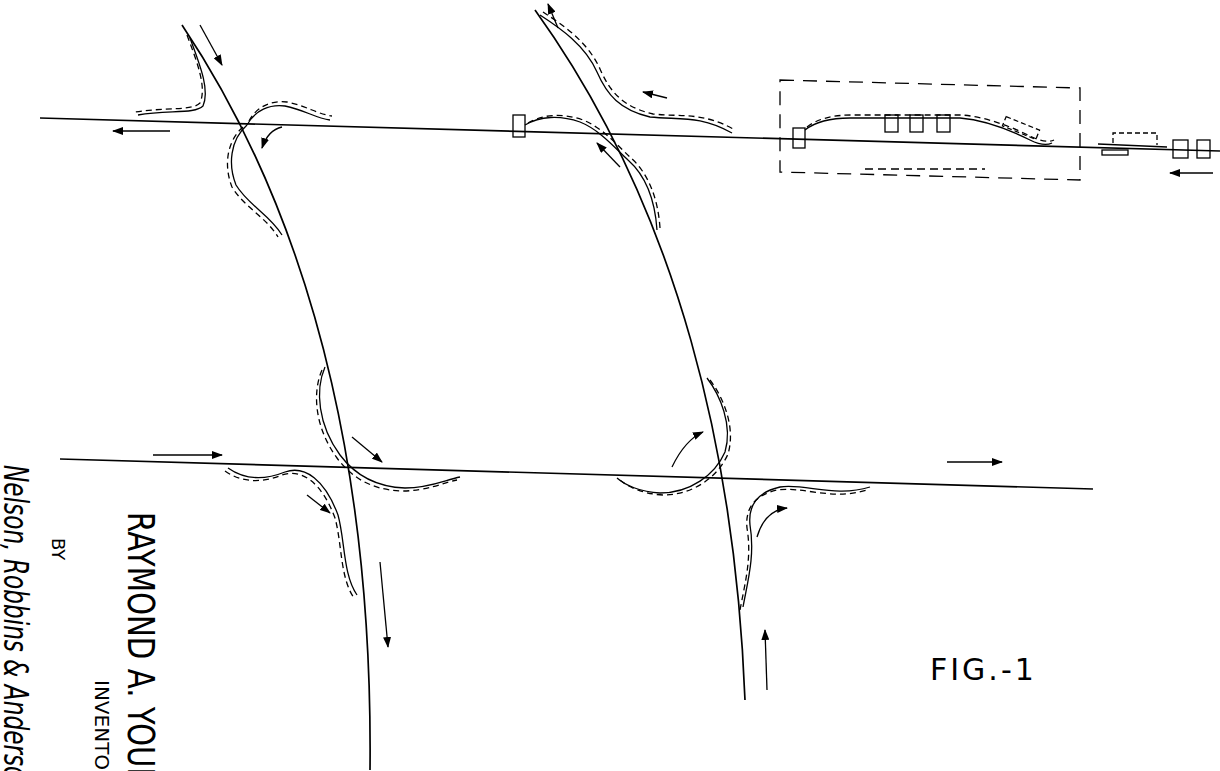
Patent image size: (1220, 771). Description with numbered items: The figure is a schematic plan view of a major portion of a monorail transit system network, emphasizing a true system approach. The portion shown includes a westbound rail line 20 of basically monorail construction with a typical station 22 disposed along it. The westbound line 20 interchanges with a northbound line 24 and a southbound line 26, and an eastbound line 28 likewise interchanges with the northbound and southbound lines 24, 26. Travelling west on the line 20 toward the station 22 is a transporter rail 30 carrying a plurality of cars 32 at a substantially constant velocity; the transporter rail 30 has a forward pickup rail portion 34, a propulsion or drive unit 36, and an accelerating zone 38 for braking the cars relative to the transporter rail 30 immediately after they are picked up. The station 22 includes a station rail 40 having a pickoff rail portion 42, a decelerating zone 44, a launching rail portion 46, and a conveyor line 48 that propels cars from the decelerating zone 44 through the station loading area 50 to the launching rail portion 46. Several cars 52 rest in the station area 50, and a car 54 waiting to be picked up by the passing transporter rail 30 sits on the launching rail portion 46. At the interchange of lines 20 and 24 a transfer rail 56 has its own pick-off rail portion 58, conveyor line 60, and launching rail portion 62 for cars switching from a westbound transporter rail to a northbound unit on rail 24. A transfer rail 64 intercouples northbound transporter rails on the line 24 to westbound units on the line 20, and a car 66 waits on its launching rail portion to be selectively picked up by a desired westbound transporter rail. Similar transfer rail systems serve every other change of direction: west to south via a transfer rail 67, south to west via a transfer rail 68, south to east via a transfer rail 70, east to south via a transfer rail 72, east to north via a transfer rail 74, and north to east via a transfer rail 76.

The westbound rail line 20 is at (388, 125).
The station 22 is at (977, 178).
The northbound line 24 is at (535, 10).
The southbound line 26 is at (220, 95).
The eastbound line 28 is at (960, 485).
The transporter rail 30 is at (1167, 147).
The cars 32 is at (1205, 140).
The forward pickup rail portion 34 is at (1105, 143).
The propulsion or drive unit 36 is at (1106, 157).
The accelerating zone 38 is at (1143, 133).
The station rail 40 is at (950, 122).
The pickoff rail portion 42 is at (1052, 140).
The decelerating zone 44 is at (1016, 116).
The launching rail portion 46 is at (814, 130).
The conveyor line 48 is at (847, 117).
The station loading area 50 is at (958, 108).
The cars 52 is at (905, 131).
The car 54 is at (801, 128).
The transfer rail 56 is at (665, 115).
The pick-off rail portion 58 is at (725, 130).
The conveyor line 60 is at (630, 100).
The launching rail portion 62 is at (556, 26).
The transfer rail 64 is at (656, 210).
The car 66 is at (517, 115).
The transfer rail 67 is at (233, 173).
The transfer rail 68 is at (200, 112).
The transfer rail 70 is at (328, 425).
The transfer rail 72 is at (345, 522).
The transfer rail 74 is at (730, 423).
The transfer rail 76 is at (833, 498).